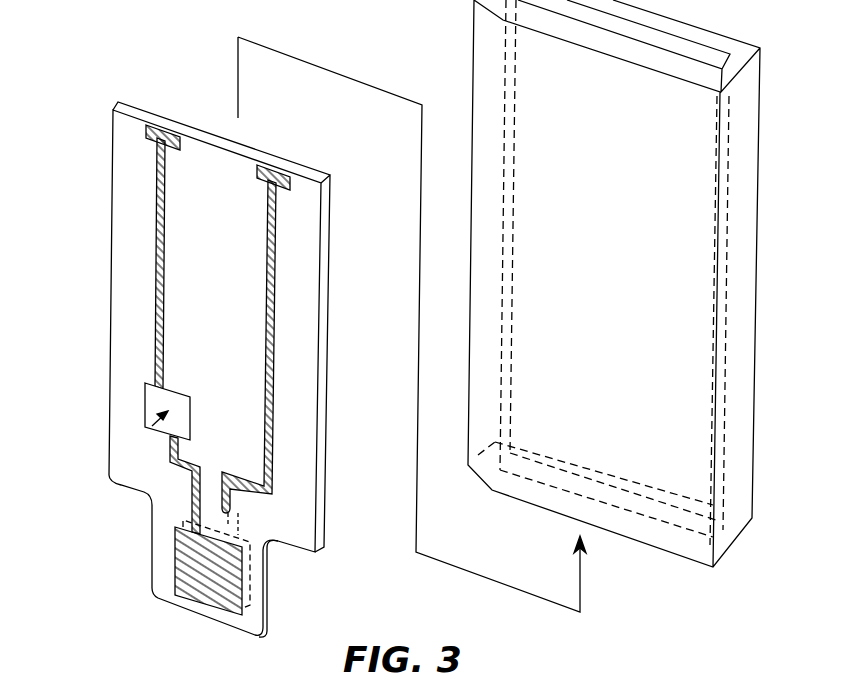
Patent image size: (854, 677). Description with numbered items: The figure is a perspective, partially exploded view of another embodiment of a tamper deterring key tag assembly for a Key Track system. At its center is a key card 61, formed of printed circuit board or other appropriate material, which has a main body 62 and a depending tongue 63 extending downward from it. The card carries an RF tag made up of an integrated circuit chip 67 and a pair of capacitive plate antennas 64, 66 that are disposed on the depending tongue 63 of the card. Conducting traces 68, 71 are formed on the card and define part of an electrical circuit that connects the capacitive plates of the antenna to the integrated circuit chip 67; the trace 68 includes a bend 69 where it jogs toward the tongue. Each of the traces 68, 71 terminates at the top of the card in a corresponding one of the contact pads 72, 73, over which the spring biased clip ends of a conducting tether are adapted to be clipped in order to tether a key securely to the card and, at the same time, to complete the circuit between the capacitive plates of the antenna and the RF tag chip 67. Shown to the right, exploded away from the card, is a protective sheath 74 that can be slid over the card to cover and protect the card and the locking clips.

The key card 61 is at (133, 306).
The main body 62 is at (242, 385).
The depending tongue 63 is at (268, 565).
The capacitive plate antenna 64 is at (198, 594).
The capacitive plate antenna 66 is at (277, 607).
The integrated circuit chip 67 is at (150, 426).
The conducting trace 68 is at (156, 214).
The groove bend 69 is at (170, 461).
The conducting trace 71 is at (269, 352).
The contact pad 72 is at (160, 133).
The contact pad 73 is at (267, 168).
The protective sheath 74 is at (669, 391).